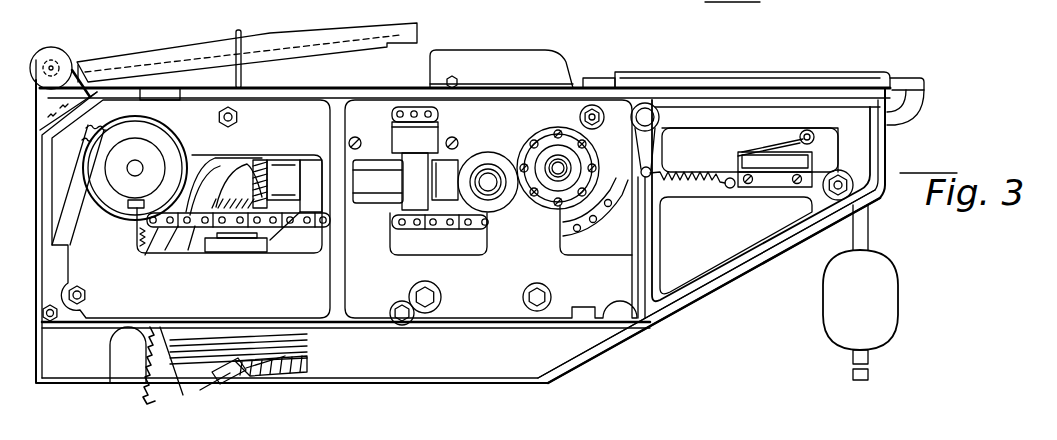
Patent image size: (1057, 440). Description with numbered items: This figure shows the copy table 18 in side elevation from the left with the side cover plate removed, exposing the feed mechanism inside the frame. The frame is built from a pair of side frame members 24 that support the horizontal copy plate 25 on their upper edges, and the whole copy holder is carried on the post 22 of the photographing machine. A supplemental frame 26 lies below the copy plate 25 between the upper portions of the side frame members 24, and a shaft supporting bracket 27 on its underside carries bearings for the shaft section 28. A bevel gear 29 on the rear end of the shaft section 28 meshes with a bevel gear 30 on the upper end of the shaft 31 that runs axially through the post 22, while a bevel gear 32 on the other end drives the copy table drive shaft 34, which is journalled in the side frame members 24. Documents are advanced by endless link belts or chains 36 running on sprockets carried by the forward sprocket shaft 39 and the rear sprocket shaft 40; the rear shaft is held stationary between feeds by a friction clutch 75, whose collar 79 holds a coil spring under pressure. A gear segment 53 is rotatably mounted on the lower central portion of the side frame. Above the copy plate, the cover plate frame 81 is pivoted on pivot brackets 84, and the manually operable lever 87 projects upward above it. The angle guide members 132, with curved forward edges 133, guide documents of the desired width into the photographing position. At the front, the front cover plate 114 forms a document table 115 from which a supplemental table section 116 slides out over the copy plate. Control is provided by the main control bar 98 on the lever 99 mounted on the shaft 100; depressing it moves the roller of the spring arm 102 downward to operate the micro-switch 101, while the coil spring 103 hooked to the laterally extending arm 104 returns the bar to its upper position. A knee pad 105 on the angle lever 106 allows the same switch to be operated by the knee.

The copy table 18 is at (772, 70).
The post 22 is at (312, 368).
The side frame members 24 is at (460, 231).
The copy plate 25 is at (371, 88).
The supplemental frame 26 is at (415, 137).
The shaft supporting bracket 27 is at (400, 206).
The shaft section 28 is at (390, 181).
The bevel gear 29 is at (255, 166).
The bevel gear 30 is at (224, 182).
The shaft 31 is at (236, 382).
The bevel gear 32 is at (459, 164).
The copy table drive shaft 34 is at (490, 190).
The endless link belts or chains 36 is at (418, 107).
The sprocket shaft 39 is at (560, 165).
The sprocket shaft 40 is at (139, 166).
The gear segment 53 is at (163, 362).
The friction clutch 75 is at (194, 138).
The collar 79 is at (135, 168).
The cover plate frame 81 is at (333, 28).
The pivot brackets 84 is at (50, 95).
The manually operable lever 87 is at (240, 30).
The main control bar 98 is at (923, 78).
The lever 99 is at (761, 138).
The shaft 100 is at (654, 118).
The micro-switch 101 is at (775, 169).
The spring arm 102 is at (792, 143).
The coil spring 103 is at (705, 177).
The laterally extending arm 104 is at (660, 152).
The knee pad 105 is at (860, 315).
The angle lever 106 is at (839, 243).
The front cover plate 114 is at (742, 256).
The document table 115 is at (877, 73).
The supplemental table section 116 is at (608, 78).
The angle guide members 132 is at (468, 75).
The curved forward edges 133 is at (562, 62).